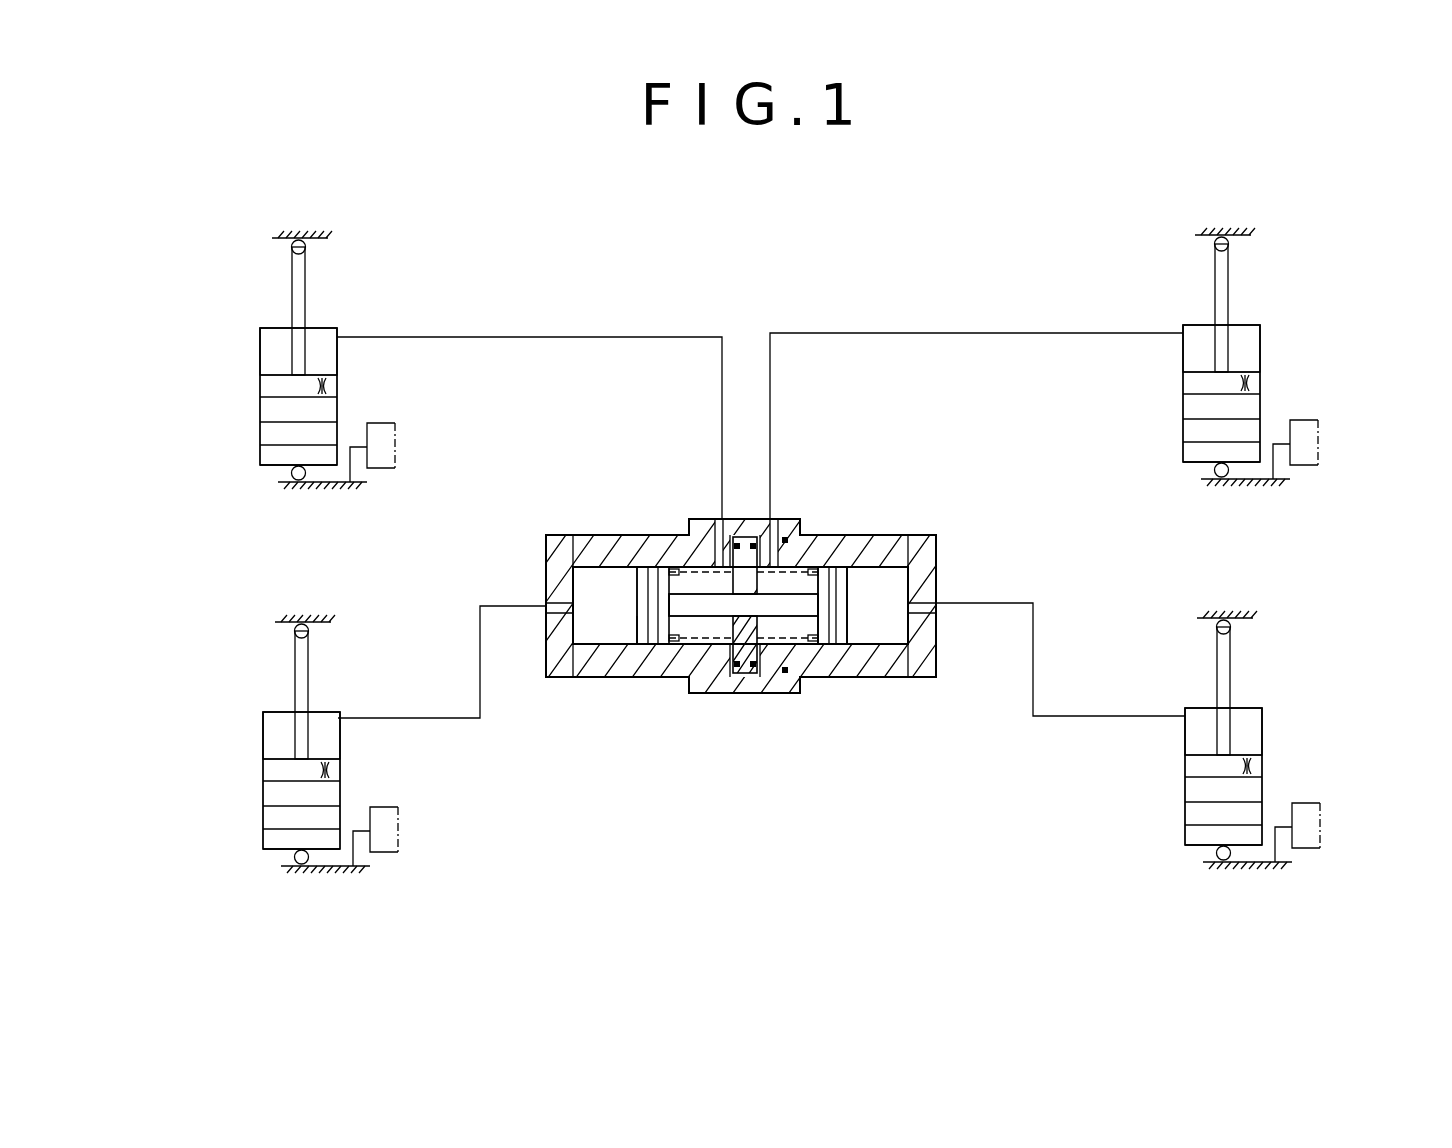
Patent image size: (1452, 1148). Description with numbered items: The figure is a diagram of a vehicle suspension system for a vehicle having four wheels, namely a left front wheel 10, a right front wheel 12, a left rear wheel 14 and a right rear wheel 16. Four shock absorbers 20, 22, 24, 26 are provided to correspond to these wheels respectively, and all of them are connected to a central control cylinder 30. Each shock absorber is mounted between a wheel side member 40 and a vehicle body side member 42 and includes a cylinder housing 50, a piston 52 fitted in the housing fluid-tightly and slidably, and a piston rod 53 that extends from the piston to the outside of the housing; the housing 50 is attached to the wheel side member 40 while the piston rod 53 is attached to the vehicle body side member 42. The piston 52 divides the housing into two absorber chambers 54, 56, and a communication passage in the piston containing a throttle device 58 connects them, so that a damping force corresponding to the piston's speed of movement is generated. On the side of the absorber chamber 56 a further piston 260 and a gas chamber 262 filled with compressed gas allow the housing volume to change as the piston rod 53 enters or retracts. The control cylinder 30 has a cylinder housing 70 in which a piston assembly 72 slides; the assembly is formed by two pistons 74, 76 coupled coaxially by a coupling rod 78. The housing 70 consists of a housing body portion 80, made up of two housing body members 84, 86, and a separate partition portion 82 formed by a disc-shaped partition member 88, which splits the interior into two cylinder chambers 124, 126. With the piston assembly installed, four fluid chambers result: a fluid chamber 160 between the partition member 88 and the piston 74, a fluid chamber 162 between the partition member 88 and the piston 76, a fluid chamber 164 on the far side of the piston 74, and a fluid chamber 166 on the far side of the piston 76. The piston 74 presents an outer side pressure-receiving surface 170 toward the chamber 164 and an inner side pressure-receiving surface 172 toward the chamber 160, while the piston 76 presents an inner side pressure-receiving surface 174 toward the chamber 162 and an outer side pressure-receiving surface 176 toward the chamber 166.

The left front wheel 10 is at (392, 447).
The right front wheel 12 is at (1312, 446).
The left rear wheel 14 is at (395, 830).
The right rear wheel 16 is at (1315, 829).
The shock absorber 20 is at (252, 318).
The shock absorber 22 is at (1310, 272).
The shock absorber 24 is at (252, 702).
The shock absorber 26 is at (1312, 655).
The control cylinder 30 is at (787, 510).
The wheel side member 40 is at (1217, 865).
The vehicle body side member 42 is at (1252, 616).
The cylinder housing 50 is at (1193, 713).
The piston 52 is at (1197, 765).
The piston rod 53 is at (1225, 661).
The absorber chamber 54 is at (1243, 715).
The absorber chamber 56 is at (1213, 791).
The throttle device 58 is at (1258, 769).
The cylinder housing 70 is at (626, 530).
The piston assembly 72 is at (625, 590).
The piston 74 is at (633, 640).
The piston 76 is at (840, 570).
The coupling rod 78 is at (720, 588).
The housing body portion 80 is at (640, 680).
The partition portion 82 is at (727, 572).
The housing body member 84 is at (557, 578).
The housing body member 86 is at (922, 652).
The partition member 88 is at (747, 540).
The cylinder chamber 124 is at (628, 655).
The cylinder chamber 126 is at (890, 650).
The fluid chamber 160 is at (690, 650).
The fluid chamber 162 is at (773, 672).
The fluid chamber 164 is at (580, 572).
The fluid chamber 166 is at (880, 583).
The outer side pressure-receiving surface 170 is at (636, 618).
The inner side pressure-receiving surface 172 is at (615, 560).
The inner side pressure-receiving surface 174 is at (805, 567).
The outer side pressure-receiving surface 176 is at (848, 625).
The piston 260 is at (1215, 813).
The gas chamber 262 is at (1222, 836).